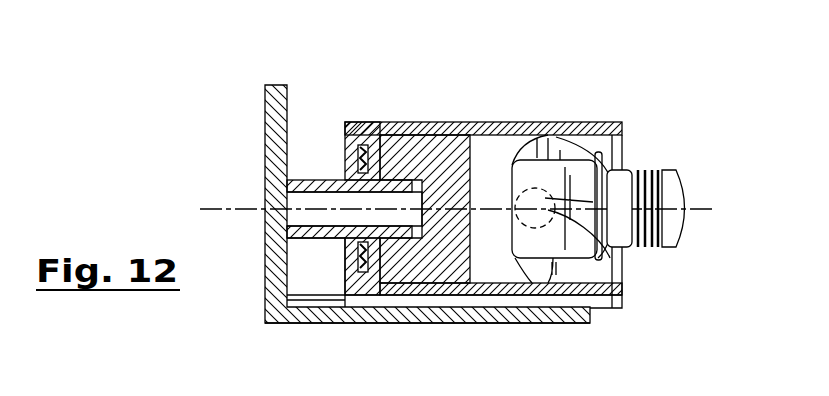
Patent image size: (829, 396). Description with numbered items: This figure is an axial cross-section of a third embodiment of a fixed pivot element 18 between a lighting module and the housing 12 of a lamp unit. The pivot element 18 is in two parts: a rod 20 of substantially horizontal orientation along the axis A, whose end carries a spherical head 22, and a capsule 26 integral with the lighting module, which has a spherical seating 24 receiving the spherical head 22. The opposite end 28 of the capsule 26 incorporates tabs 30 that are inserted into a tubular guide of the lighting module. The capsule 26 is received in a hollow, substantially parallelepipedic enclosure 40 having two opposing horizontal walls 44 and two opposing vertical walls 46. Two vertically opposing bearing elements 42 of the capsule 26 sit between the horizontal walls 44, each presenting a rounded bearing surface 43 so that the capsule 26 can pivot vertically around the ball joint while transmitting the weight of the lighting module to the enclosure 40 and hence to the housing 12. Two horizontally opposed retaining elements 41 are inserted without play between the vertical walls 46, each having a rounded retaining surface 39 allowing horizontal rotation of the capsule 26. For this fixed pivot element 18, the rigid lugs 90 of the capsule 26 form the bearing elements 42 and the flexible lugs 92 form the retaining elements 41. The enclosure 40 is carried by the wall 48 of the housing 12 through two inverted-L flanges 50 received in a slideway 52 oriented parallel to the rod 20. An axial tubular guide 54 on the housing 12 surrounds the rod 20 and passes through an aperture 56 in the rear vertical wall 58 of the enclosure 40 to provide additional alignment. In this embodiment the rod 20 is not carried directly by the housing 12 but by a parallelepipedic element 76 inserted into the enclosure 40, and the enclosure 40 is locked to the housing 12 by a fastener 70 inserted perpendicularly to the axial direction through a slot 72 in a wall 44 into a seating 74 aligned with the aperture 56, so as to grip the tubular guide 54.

The housing 12 is at (291, 98).
The pivot element 18 is at (503, 265).
The rod 20 is at (487, 190).
The spherical head 22 is at (623, 172).
The seating 24 is at (625, 300).
The capsule 26 is at (694, 189).
The opposite end 28 is at (692, 222).
The tabs 30 is at (656, 170).
The retaining surface 39 is at (530, 295).
The enclosure 40 is at (478, 112).
The retaining element 41 is at (585, 298).
The bearing element 42 is at (620, 124).
The bearing surface 43 is at (588, 123).
The horizontal wall 44 is at (503, 123).
The vertical wall 46 is at (612, 270).
The wall of the housing 48 is at (323, 307).
The flange 50 is at (396, 322).
The slideway 52 is at (303, 323).
The axial tubular guide 54 is at (320, 180).
The aperture 56 is at (350, 194).
The rear vertical wall 58 is at (347, 272).
The fastener 70 is at (360, 296).
The slot 72 is at (360, 123).
The seating 74 is at (365, 127).
The parallelepipedic element 76 is at (424, 312).
The rigid lug 90 is at (546, 138).
The flexible lug 92 is at (522, 160).
The axis A is at (217, 209).